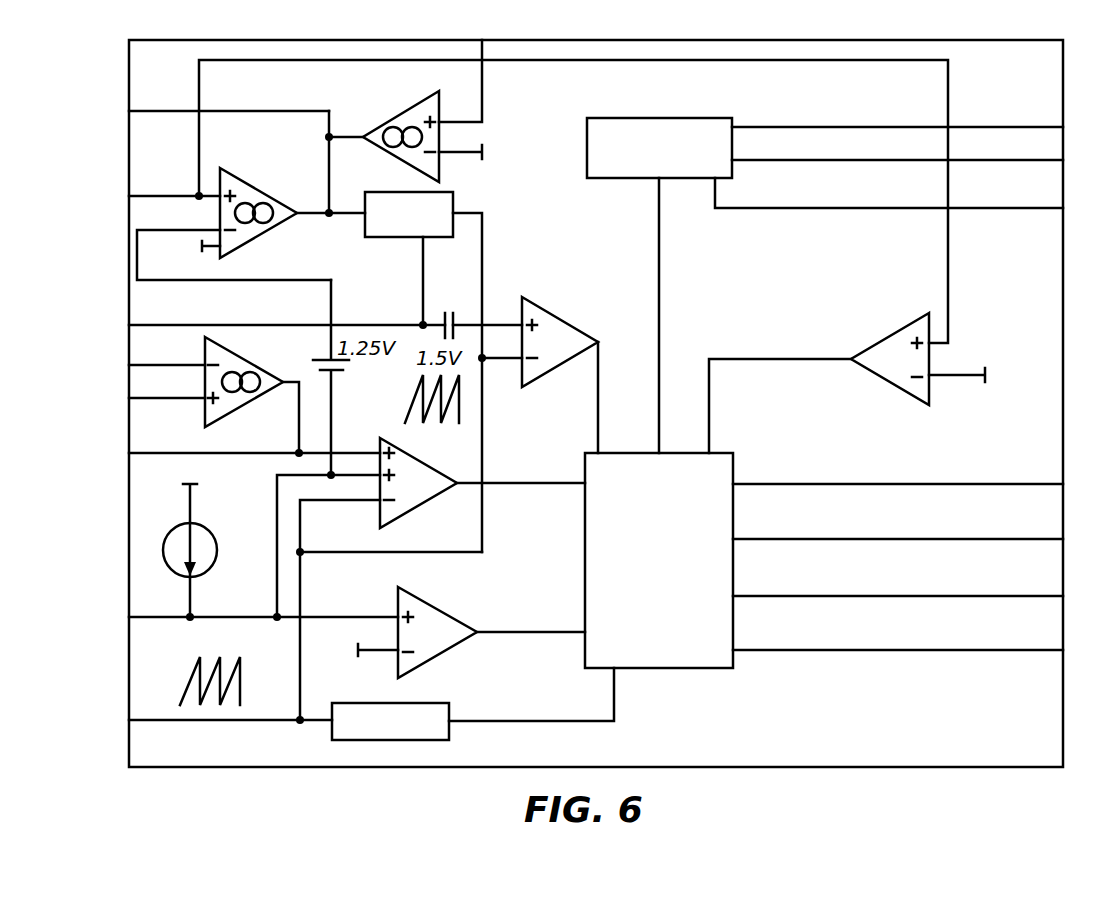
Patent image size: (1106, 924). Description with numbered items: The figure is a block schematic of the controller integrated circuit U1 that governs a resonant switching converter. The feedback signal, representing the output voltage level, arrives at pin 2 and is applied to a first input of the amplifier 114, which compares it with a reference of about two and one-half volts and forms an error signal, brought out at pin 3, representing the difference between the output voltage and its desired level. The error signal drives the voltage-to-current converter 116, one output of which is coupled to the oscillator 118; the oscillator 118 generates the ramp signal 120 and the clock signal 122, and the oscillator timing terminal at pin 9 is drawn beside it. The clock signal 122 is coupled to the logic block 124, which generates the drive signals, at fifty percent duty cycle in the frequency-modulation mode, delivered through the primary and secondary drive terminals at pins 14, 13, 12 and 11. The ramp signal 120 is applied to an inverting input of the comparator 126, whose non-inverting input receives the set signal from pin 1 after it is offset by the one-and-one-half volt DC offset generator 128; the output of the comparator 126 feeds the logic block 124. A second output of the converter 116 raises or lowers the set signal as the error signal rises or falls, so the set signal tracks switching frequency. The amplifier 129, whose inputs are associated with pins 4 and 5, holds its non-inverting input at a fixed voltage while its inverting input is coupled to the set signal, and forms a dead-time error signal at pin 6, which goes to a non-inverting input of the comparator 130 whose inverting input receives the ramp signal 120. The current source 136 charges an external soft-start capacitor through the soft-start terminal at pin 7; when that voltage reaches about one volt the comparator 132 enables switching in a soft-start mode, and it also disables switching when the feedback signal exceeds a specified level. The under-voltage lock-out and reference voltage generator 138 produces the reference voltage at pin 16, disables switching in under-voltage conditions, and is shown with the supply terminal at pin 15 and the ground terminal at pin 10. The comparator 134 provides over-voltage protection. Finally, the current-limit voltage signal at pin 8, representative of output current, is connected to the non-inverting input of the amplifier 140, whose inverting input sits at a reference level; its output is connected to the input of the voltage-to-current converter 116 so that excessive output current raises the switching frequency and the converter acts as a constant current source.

The controller integrated circuit U1 is at (826, 40).
The ILIM pin 8 is at (486, 66).
The FEAO pin 3 is at (213, 104).
The VFB pin 2 is at (158, 189).
The RSET pin 1 is at (309, 318).
The input pin 4 is at (151, 365).
The input pin 5 is at (151, 398).
The DEAO pin 6 is at (238, 445).
The CSS pin 7 is at (247, 609).
The RT CT pin 9 is at (214, 729).
The VCC pin 15 is at (916, 126).
The VREF pin 16 is at (916, 162).
The GND pin 10 is at (908, 200).
The PRIDRV pin 14 is at (917, 478).
The PRIDRVB pin 13 is at (917, 533).
The SRDVR pin 12 is at (917, 590).
The SRDRVB pin 11 is at (917, 644).
The amplifier 140 is at (396, 114).
The amplifier 114 is at (275, 178).
The voltage-to-current converter 116 is at (455, 194).
The DC offset generator 128 is at (455, 312).
The comparator 126 is at (527, 303).
The amplifier 129 is at (248, 356).
The ramp signal 120 is at (423, 415).
The comparator 130 is at (410, 518).
The current source 136 is at (180, 532).
The comparator 132 is at (466, 606).
The oscillator 118 is at (415, 703).
The clock signal 122 is at (616, 702).
The logic block 124 is at (668, 625).
The under-voltage lock-out and reference voltage generator 138 is at (592, 180).
The comparator 134 is at (886, 338).